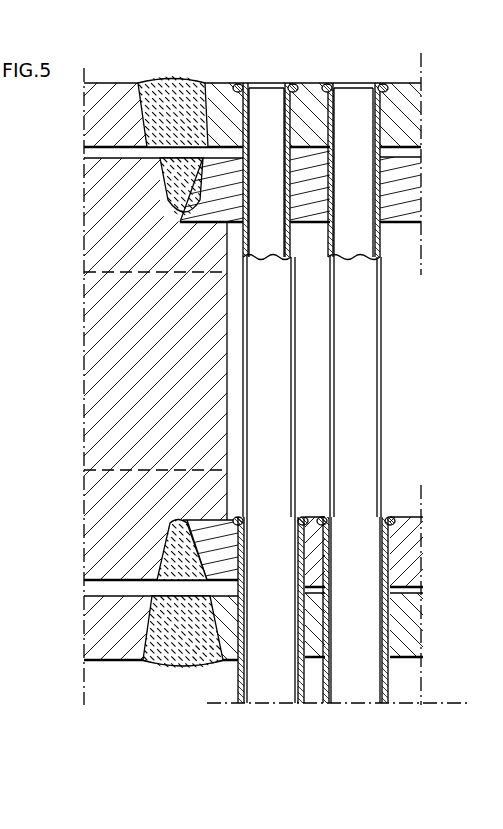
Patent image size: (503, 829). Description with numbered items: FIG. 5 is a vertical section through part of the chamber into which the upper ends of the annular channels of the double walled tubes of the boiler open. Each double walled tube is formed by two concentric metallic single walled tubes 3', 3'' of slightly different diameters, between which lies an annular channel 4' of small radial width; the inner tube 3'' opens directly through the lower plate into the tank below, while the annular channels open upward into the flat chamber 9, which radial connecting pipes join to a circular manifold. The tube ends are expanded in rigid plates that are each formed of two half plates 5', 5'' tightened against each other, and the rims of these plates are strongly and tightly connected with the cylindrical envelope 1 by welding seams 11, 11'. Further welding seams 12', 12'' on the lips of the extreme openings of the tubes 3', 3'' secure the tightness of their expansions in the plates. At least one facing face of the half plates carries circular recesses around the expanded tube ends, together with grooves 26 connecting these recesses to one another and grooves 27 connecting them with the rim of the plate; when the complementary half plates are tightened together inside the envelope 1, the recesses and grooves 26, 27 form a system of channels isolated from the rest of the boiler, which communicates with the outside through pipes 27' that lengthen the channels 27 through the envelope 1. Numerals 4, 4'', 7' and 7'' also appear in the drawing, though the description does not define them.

The envelope 1 is at (96, 318).
The outer single walled tube 3' is at (326, 610).
The inner single walled tube 3'' is at (326, 170).
The tube end 4 is at (338, 707).
The annular channel 4' is at (313, 610).
The upper inner tube 4'' is at (311, 186).
The half plate 5' is at (325, 120).
The half plate 5'' is at (315, 164).
The lower plate 7' is at (377, 552).
The bottom plate 7'' is at (269, 629).
The flat chamber 9 is at (312, 400).
The welding seam 11 is at (180, 135).
The welding seam 11' is at (183, 603).
The welding seam 12' is at (314, 511).
The welding seam 12'' is at (310, 72).
The grooves 26 is at (314, 148).
The grooves 27 is at (232, 335).
The pipes 27' is at (147, 163).